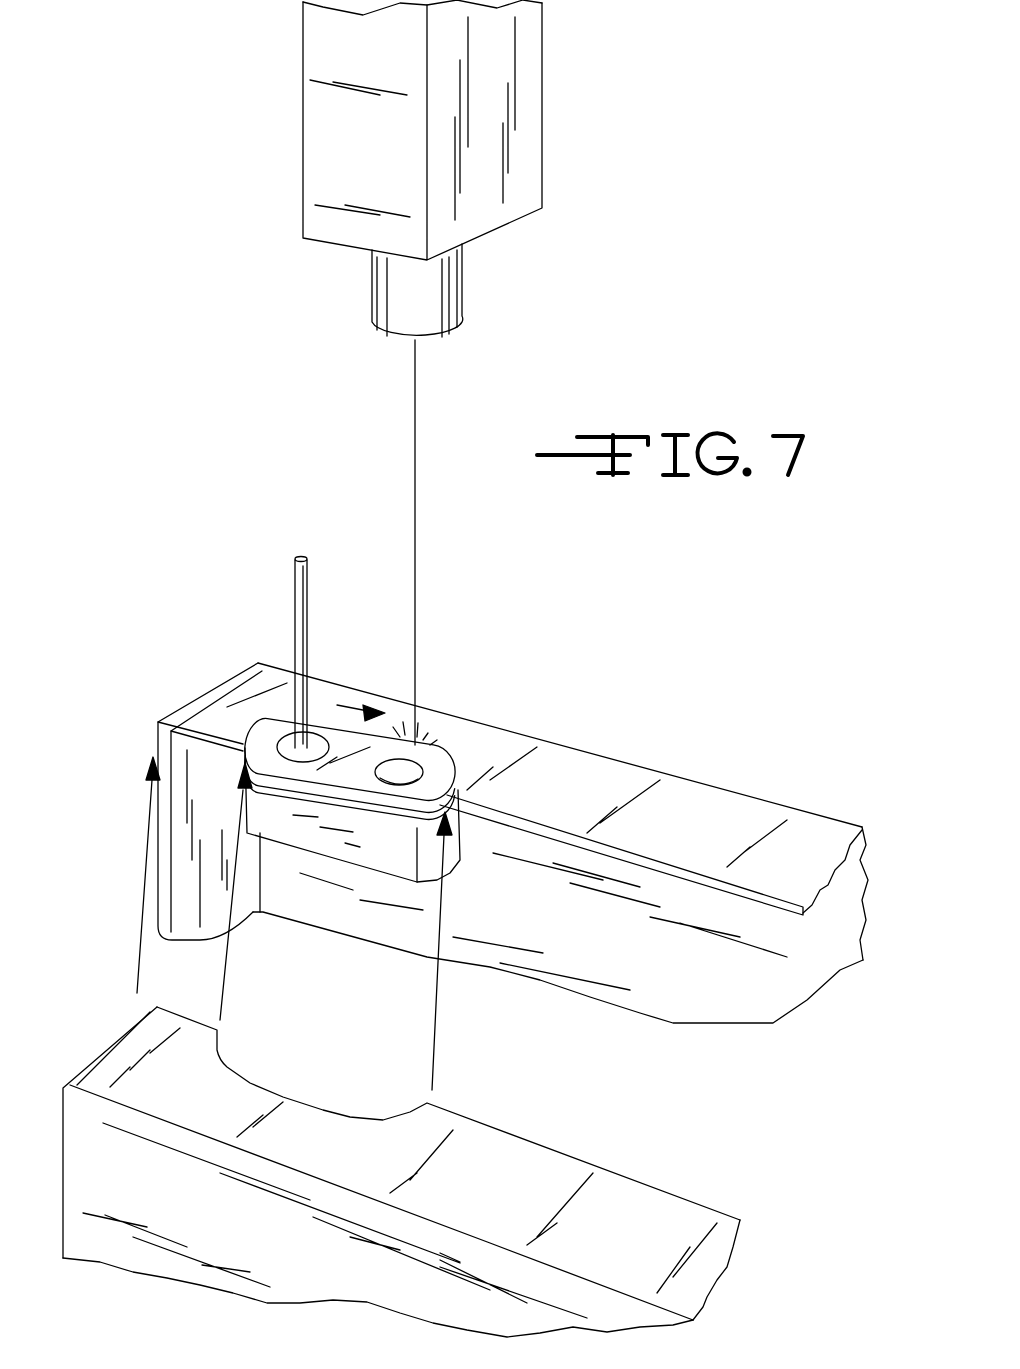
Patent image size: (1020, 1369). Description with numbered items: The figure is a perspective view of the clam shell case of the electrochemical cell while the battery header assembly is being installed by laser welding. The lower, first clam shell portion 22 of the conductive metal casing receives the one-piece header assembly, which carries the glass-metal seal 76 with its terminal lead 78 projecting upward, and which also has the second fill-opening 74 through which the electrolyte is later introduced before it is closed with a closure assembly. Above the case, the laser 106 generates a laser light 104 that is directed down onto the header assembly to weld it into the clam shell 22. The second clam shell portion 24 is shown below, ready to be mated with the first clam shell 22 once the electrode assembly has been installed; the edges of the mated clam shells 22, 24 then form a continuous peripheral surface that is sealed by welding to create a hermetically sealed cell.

The first clam shell portion 22 is at (697, 813).
The second clam shell portion 24 is at (630, 1203).
The second fill-opening 74 is at (408, 773).
The glass-metal seal 76 is at (285, 742).
The terminal lead 78 is at (301, 555).
The laser light 104 is at (417, 597).
The laser 106 is at (464, 283).